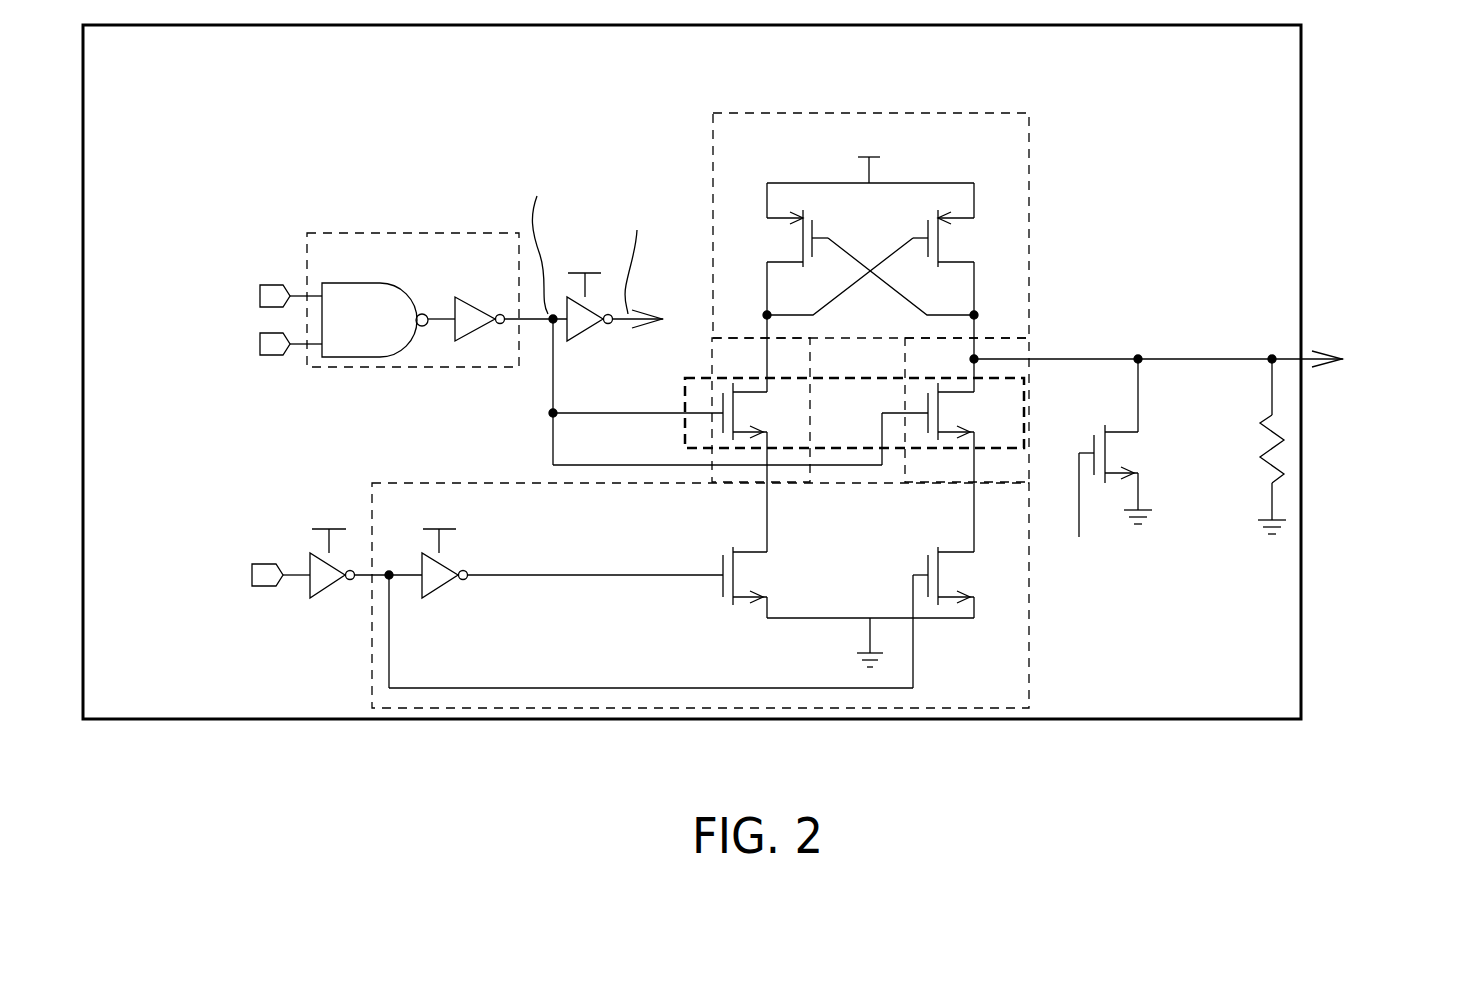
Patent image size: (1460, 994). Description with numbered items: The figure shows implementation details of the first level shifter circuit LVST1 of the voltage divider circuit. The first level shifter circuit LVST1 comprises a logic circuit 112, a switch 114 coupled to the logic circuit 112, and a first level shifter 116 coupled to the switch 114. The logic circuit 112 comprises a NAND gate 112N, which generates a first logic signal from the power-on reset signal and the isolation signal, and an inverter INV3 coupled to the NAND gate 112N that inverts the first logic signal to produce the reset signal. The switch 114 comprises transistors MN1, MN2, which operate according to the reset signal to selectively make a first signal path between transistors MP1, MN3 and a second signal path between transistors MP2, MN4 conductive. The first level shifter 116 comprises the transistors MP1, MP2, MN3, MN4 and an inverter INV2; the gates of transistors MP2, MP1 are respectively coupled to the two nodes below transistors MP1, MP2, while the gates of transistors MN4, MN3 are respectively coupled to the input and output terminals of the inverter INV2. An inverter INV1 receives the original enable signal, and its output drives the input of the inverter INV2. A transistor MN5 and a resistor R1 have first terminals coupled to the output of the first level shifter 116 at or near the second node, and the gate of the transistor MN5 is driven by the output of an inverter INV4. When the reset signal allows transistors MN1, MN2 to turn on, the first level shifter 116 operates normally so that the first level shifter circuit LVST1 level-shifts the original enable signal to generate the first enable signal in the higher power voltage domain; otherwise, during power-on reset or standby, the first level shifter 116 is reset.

The first level shifter circuit LVST1 is at (915, 73).
The logic circuit 112 is at (385, 267).
The NAND gate 112N is at (399, 338).
The switch 114 is at (1028, 397).
The first level shifter 116 is at (639, 653).
The inverter INV1 is at (331, 588).
The inverter INV2 is at (441, 588).
The inverter INV3 is at (476, 297).
The inverter INV4 is at (587, 333).
The transistor MP1 is at (777, 249).
The transistor MP2 is at (964, 249).
The transistor MN1 is at (761, 411).
The transistor MN2 is at (971, 411).
The transistor MN3 is at (764, 576).
The transistor MN4 is at (965, 576).
The transistor MN5 is at (1136, 448).
The resistor R1 is at (1252, 446).